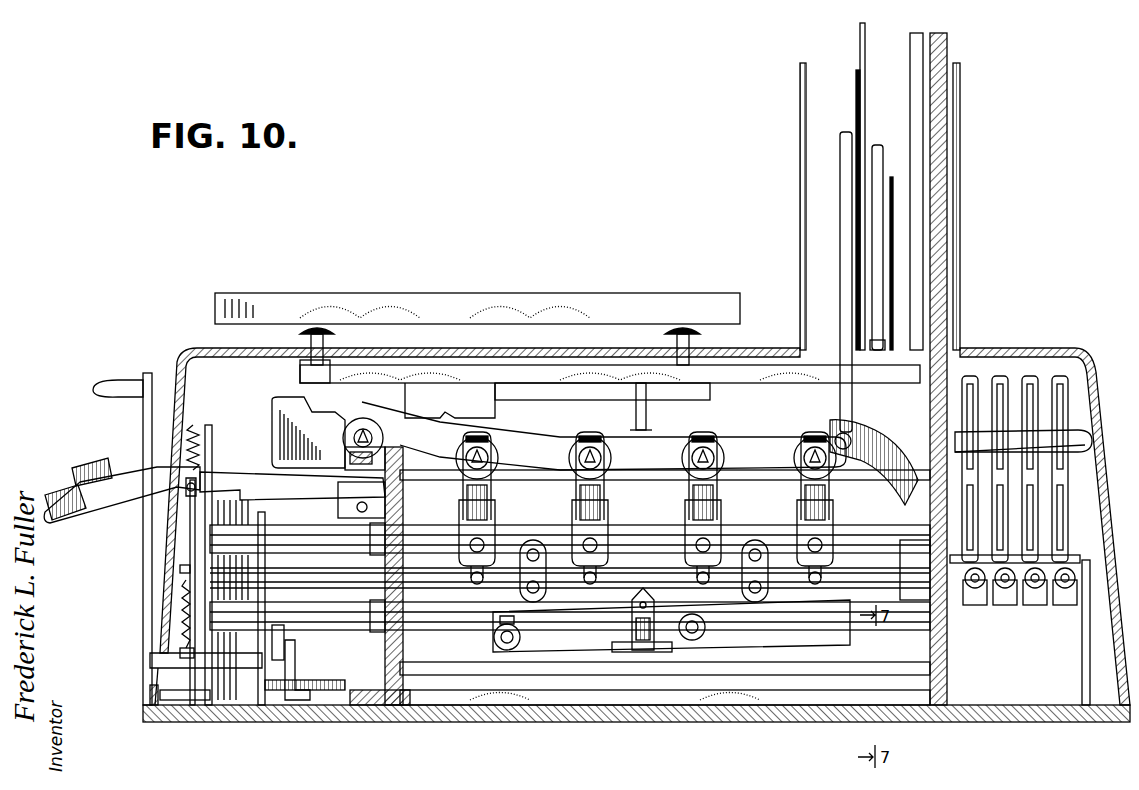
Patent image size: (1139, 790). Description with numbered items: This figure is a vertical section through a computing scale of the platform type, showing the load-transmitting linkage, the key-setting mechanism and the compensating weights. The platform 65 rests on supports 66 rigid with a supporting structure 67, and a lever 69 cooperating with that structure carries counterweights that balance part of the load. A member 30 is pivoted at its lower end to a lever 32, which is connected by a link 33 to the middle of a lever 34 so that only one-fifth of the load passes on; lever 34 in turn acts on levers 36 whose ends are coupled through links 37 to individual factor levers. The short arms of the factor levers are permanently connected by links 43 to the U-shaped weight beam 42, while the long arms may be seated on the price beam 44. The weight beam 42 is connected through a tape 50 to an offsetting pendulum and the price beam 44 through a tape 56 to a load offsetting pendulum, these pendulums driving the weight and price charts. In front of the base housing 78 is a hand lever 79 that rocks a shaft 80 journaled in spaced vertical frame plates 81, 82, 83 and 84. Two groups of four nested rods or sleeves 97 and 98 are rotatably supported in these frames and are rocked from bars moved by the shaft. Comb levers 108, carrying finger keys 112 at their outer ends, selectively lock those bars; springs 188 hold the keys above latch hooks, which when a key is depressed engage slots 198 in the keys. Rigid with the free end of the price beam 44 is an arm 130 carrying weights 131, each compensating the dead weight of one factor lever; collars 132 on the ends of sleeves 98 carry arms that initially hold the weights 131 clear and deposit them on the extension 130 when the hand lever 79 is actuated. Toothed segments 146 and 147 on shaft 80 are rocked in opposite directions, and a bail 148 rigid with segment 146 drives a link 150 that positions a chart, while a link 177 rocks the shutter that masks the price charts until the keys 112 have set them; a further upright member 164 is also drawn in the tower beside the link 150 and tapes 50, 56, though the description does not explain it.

The member 30 is at (636, 408).
The lever 32 is at (666, 645).
The link 33 is at (640, 622).
The lever 34 is at (718, 600).
The levers 36 is at (510, 578).
The links 37 is at (458, 514).
The weight beam 42 is at (320, 425).
The links 43 is at (578, 488).
The price beam 44 is at (674, 426).
The tape 50 is at (876, 158).
The tape 56 is at (843, 222).
The platform 65 is at (487, 308).
The supports 66 is at (318, 342).
The supporting structure 67 is at (460, 383).
The lever 69 is at (572, 632).
The base housing 78 is at (183, 355).
The hand lever 79 is at (143, 563).
The shaft 80 is at (460, 668).
The frame plate 81 is at (195, 698).
The frame plate 82 is at (262, 700).
The frame plate 83 is at (413, 705).
The frame plate 84 is at (935, 696).
The nested rods or sleeves 97 is at (898, 560).
The nested rods or sleeves 98 is at (428, 580).
The comb levers 108 is at (258, 482).
The finger keys 112 is at (84, 475).
The arm 130 is at (1082, 432).
The weights 131 is at (1068, 500).
The collars 132 is at (1065, 600).
The toothed segment 146 is at (285, 640).
The toothed segment 147 is at (298, 700).
The bail 148 is at (472, 695).
The link 150 is at (856, 78).
The bar 164 is at (866, 52).
The link 177 is at (893, 258).
The springs 188 is at (196, 428).
The slots 198 is at (186, 490).